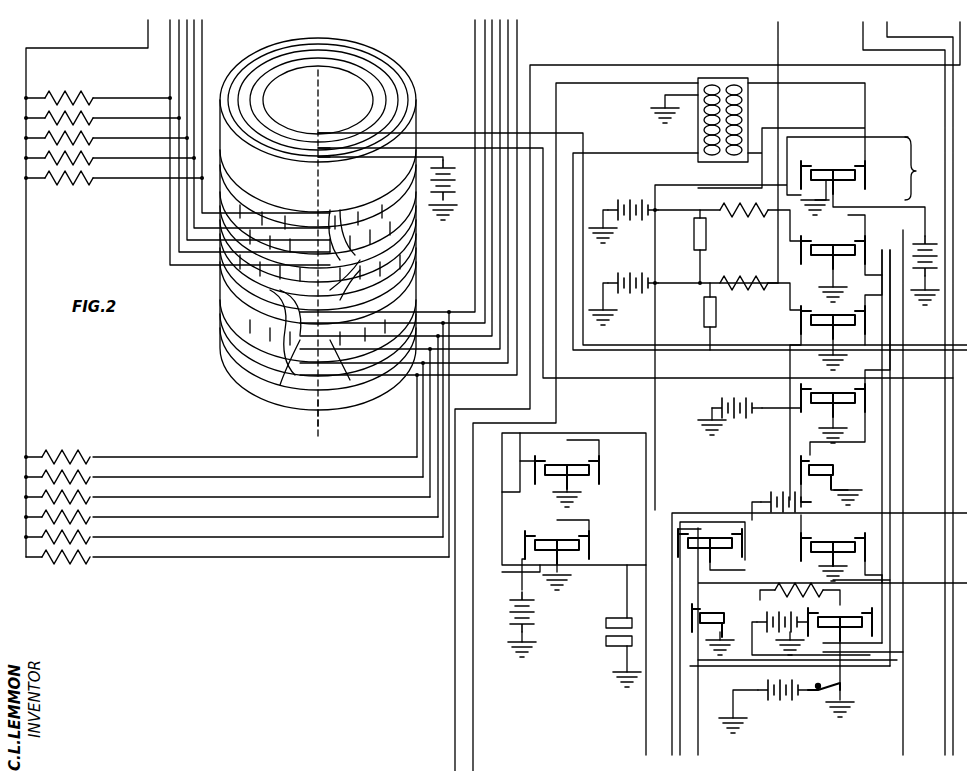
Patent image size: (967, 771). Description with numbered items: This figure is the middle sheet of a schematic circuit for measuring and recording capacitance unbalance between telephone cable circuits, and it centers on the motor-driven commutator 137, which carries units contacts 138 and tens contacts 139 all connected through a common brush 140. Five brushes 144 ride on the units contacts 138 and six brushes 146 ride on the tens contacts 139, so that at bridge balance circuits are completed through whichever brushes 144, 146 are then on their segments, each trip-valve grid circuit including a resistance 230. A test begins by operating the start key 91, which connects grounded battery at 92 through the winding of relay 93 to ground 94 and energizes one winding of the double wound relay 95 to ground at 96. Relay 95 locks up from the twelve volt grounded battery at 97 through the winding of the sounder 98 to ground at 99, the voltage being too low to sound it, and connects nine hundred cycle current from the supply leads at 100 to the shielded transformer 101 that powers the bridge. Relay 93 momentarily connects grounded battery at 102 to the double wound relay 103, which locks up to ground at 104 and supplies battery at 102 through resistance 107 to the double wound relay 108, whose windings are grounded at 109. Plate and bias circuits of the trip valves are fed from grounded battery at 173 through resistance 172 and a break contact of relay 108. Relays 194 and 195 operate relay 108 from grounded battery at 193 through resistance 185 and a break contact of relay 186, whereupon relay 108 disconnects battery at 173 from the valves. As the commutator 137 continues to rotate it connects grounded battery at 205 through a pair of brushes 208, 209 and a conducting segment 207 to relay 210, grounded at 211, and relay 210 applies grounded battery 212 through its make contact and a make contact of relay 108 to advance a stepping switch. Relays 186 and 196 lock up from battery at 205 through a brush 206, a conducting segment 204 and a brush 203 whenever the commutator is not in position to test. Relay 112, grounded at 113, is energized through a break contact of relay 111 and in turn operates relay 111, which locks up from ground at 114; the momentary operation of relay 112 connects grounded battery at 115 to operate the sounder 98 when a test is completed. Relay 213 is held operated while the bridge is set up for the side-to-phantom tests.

The resistance 230 is at (93, 160).
The conducting segment 207 is at (232, 102).
The conducting segment 204 is at (268, 76).
The brush 206 is at (290, 140).
The brush 203 is at (322, 132).
The brush 209 is at (314, 152).
The brush 208 is at (332, 187).
The brushes 144 is at (328, 225).
The brushes 146 is at (275, 325).
The units contacts 138 is at (340, 280).
The tens contacts 139 is at (325, 389).
The commutator 137 is at (260, 398).
The common brush 140 is at (307, 408).
The grounded battery 205 is at (450, 185).
The shielded transformer 101 is at (696, 120).
The supply leads 100 is at (926, 168).
The double wound relay 95 is at (822, 170).
The double wound relay 108 is at (841, 258).
The ground 96 is at (780, 218).
The grounded battery 173 is at (635, 198).
The resistance 172 is at (722, 242).
The grounded battery 193 is at (634, 276).
The resistance 185 is at (752, 313).
The ground 109 is at (836, 310).
The relay 186 is at (838, 303).
The grounded battery 97 is at (918, 280).
The relay 196 is at (812, 390).
The relay 195 is at (712, 445).
The relay 210 is at (827, 474).
The ground 211 is at (850, 496).
The grounded battery 212 is at (781, 518).
The relay 194 is at (711, 539).
The double wound relay 103 is at (841, 548).
The ground 104 is at (845, 580).
The resistance 107 is at (800, 586).
The grounded battery 102 is at (811, 636).
The relay 93 is at (845, 626).
The relay 213 is at (713, 623).
The grounded battery 92 is at (782, 698).
The start key 91 is at (820, 692).
The ground 94 is at (840, 715).
The relay 111 is at (563, 467).
The ground 114 is at (585, 502).
The relay 112 is at (565, 541).
The ground 113 is at (573, 585).
The grounded battery 115 is at (530, 607).
The sounder 98 is at (610, 648).
The ground 99 is at (620, 678).